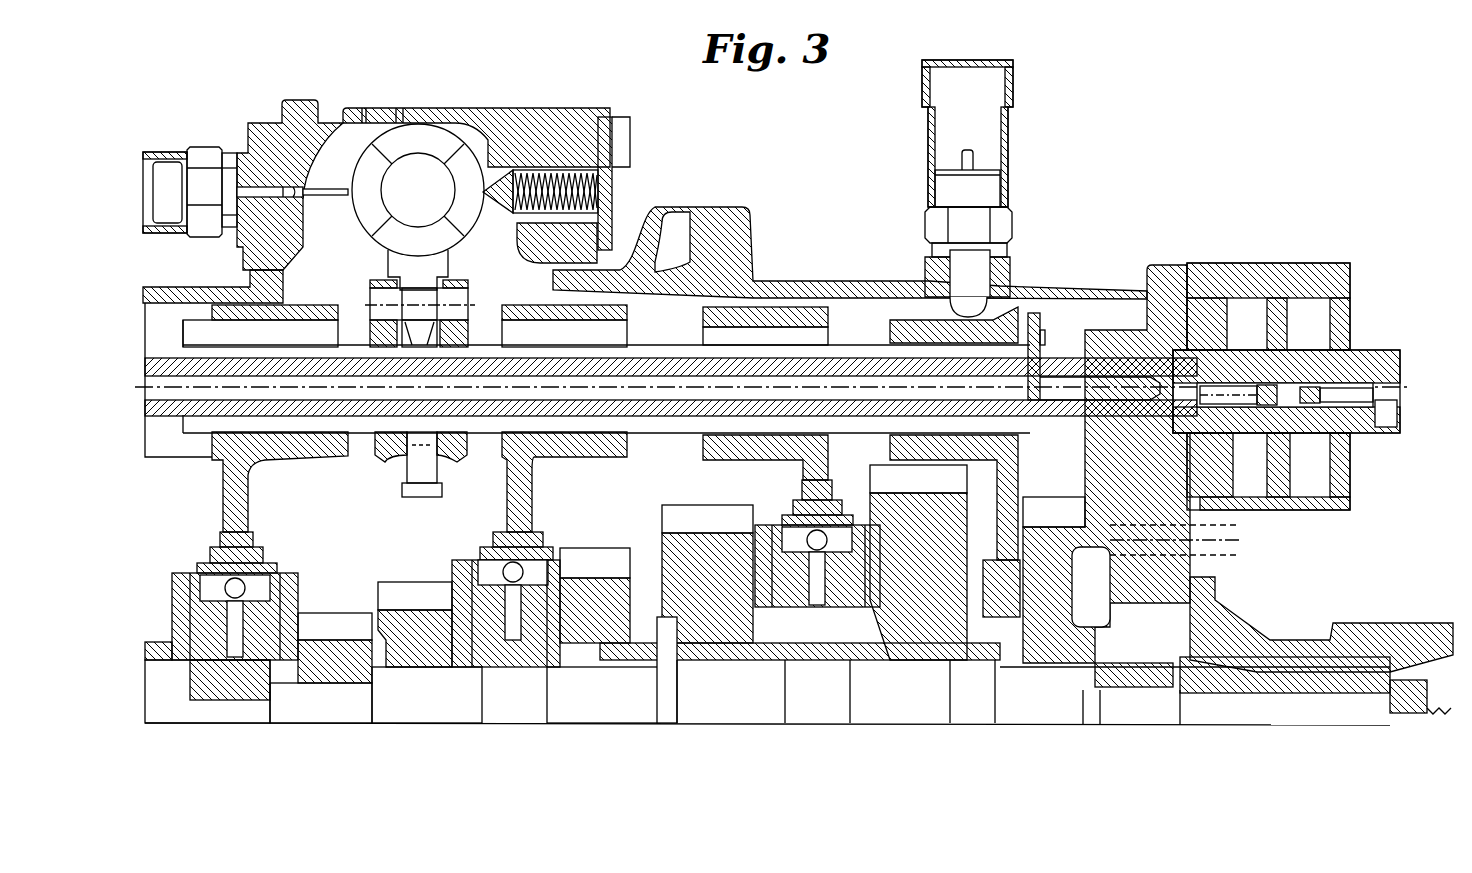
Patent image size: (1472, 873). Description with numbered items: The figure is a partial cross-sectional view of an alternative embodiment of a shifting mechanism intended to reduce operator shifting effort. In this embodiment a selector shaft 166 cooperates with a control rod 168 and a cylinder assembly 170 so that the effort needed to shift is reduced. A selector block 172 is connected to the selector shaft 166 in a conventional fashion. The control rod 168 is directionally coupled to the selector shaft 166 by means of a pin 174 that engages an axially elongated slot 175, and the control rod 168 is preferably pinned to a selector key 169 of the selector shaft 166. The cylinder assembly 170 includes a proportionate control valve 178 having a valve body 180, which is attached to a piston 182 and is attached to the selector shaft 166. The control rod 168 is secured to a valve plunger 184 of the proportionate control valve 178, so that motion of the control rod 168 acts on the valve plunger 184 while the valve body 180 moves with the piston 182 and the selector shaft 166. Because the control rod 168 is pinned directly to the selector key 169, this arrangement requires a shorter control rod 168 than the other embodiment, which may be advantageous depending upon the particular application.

The selector shaft 166 is at (507, 347).
The control rod 168 is at (1080, 367).
The selector key 169 is at (1032, 313).
The cylinder assembly 170 is at (1372, 327).
The selector block 172 is at (387, 462).
The pin 174 is at (1048, 383).
The axially elongated slot 175 is at (1130, 340).
The proportionate control valve 178 is at (1378, 437).
The valve body 180 is at (1240, 347).
The piston 182 is at (1283, 303).
The valve plunger 184 is at (1207, 383).